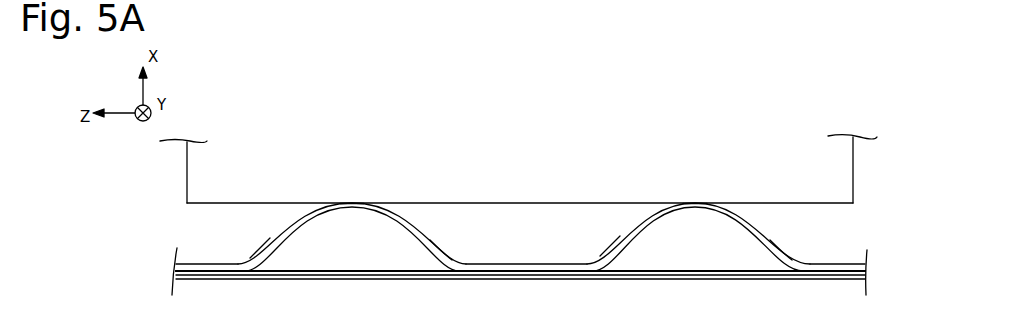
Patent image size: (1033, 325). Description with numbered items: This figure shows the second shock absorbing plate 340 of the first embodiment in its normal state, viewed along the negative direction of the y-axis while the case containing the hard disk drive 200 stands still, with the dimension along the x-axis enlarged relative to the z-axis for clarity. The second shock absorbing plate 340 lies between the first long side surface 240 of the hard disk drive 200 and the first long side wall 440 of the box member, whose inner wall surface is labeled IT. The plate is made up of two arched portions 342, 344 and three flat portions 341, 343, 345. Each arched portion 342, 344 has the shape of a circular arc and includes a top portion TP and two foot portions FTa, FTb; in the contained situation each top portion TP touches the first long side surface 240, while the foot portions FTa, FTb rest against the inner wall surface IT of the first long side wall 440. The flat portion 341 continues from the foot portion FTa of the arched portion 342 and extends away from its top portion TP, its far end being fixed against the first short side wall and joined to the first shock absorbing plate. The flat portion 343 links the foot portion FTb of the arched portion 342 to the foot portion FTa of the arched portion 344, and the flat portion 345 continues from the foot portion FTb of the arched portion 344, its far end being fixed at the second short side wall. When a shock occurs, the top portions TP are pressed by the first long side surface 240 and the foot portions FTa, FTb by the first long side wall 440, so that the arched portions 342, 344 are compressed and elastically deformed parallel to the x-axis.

The hard disk drive 200 is at (303, 172).
The first long side surface 240 is at (207, 203).
The second shock absorbing plate 340 is at (186, 237).
The flat portion 341 is at (205, 267).
The arched portion 342 is at (312, 222).
The flat portion 343 is at (487, 263).
The arched portion 344 is at (637, 230).
The flat portion 345 is at (830, 265).
The first long side wall 440 is at (335, 278).
The top portion TP is at (352, 206).
The foot portion FTa is at (263, 255).
The foot portion FTb is at (438, 257).
The inner wall surface IT is at (645, 270).